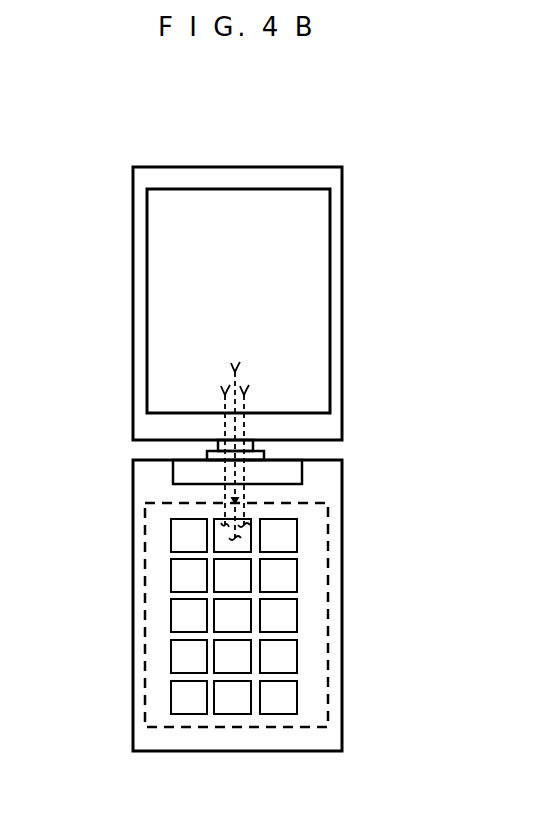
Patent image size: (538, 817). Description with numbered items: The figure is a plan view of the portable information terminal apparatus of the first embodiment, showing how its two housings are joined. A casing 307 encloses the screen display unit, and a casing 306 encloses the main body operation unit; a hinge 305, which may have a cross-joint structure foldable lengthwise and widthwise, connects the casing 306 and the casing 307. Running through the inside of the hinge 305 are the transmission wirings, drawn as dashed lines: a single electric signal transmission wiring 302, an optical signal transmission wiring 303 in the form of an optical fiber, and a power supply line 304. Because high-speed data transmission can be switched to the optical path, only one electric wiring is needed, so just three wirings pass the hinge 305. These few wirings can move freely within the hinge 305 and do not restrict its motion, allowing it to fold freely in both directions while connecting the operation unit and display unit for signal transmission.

The electric signal transmission wiring 302 is at (255, 413).
The optical signal transmission wiring 303 is at (223, 422).
The power supply line 304 is at (243, 495).
The hinge 305 is at (200, 470).
The casing 306 is at (337, 598).
The casing 307 is at (343, 232).